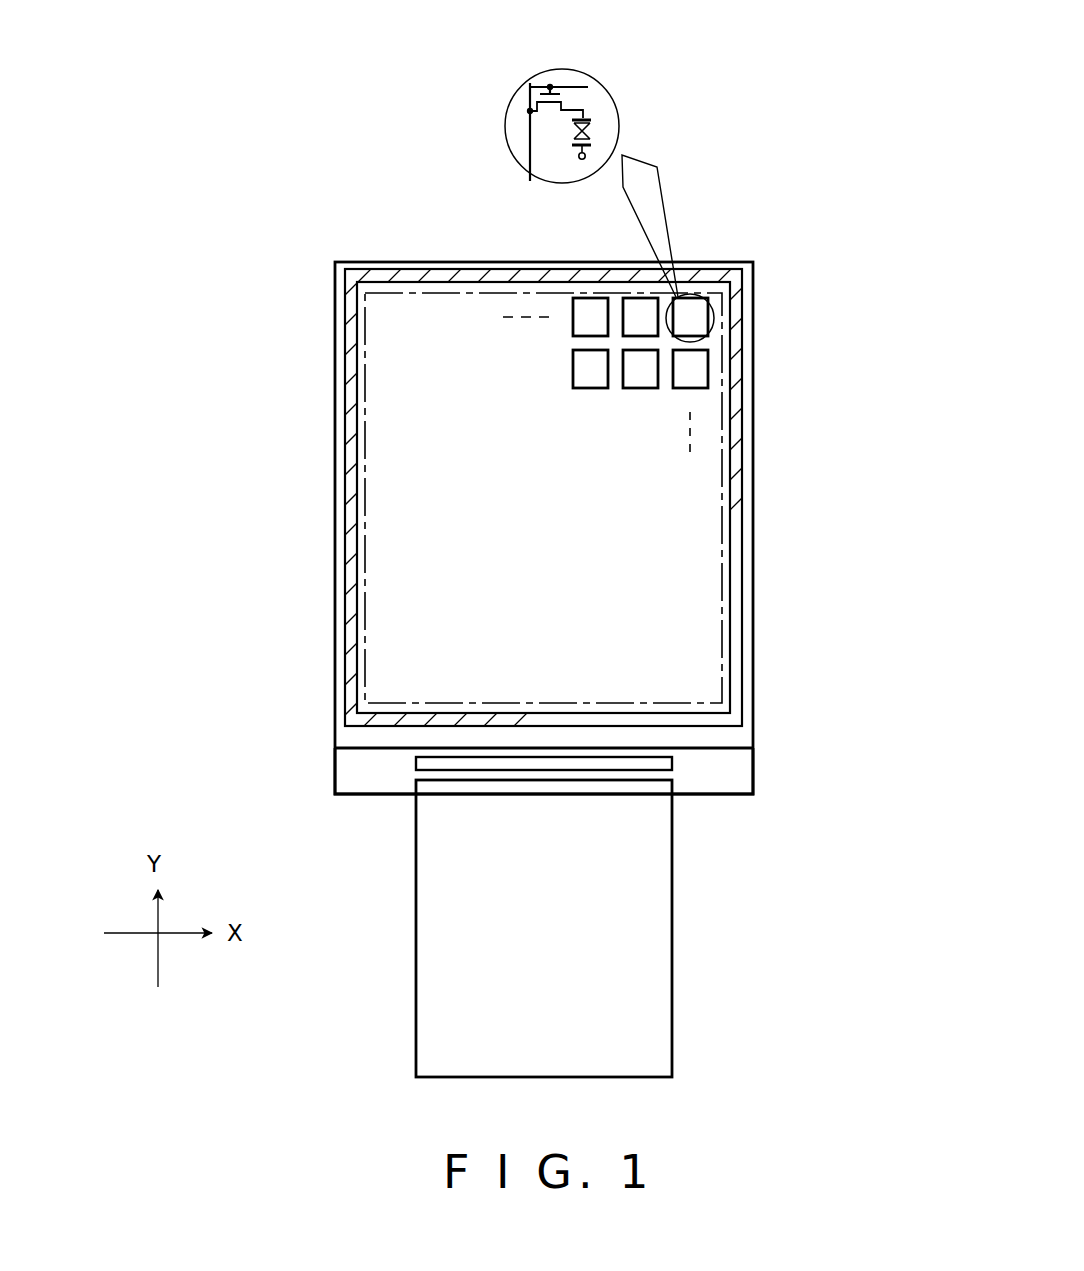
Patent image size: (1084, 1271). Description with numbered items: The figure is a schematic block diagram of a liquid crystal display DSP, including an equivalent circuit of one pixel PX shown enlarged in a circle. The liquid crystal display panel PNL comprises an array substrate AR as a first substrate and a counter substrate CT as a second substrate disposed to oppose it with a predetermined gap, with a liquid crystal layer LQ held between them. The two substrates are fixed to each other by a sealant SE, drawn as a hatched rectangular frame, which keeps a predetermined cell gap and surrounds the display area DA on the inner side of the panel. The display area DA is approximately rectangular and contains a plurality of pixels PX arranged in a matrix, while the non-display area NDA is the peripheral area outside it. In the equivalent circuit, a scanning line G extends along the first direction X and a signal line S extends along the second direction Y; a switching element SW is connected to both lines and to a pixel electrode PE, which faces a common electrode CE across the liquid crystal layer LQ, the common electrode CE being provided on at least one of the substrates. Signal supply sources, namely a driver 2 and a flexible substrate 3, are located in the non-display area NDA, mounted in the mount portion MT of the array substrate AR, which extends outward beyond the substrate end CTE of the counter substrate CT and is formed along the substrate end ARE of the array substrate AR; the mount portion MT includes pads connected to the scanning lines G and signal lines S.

The liquid crystal display DSP is at (789, 846).
The liquid crystal display panel PNL is at (313, 770).
The counter substrate CT is at (327, 725).
The array substrate AR is at (350, 802).
The sealant SE is at (741, 547).
The non-display area NDA is at (749, 736).
The display area DA is at (378, 590).
The pixel PX is at (713, 318).
The signal line S is at (531, 139).
The scanning line G is at (590, 87).
The switching element SW is at (548, 114).
The pixel electrode PE is at (591, 118).
The liquid crystal layer LQ is at (593, 131).
The common electrode CE is at (587, 151).
The mount portion MT is at (409, 780).
The substrate end CTE is at (724, 756).
The driver 2 is at (672, 764).
The flexible substrate 3 is at (672, 938).
The substrate end ARE is at (680, 803).